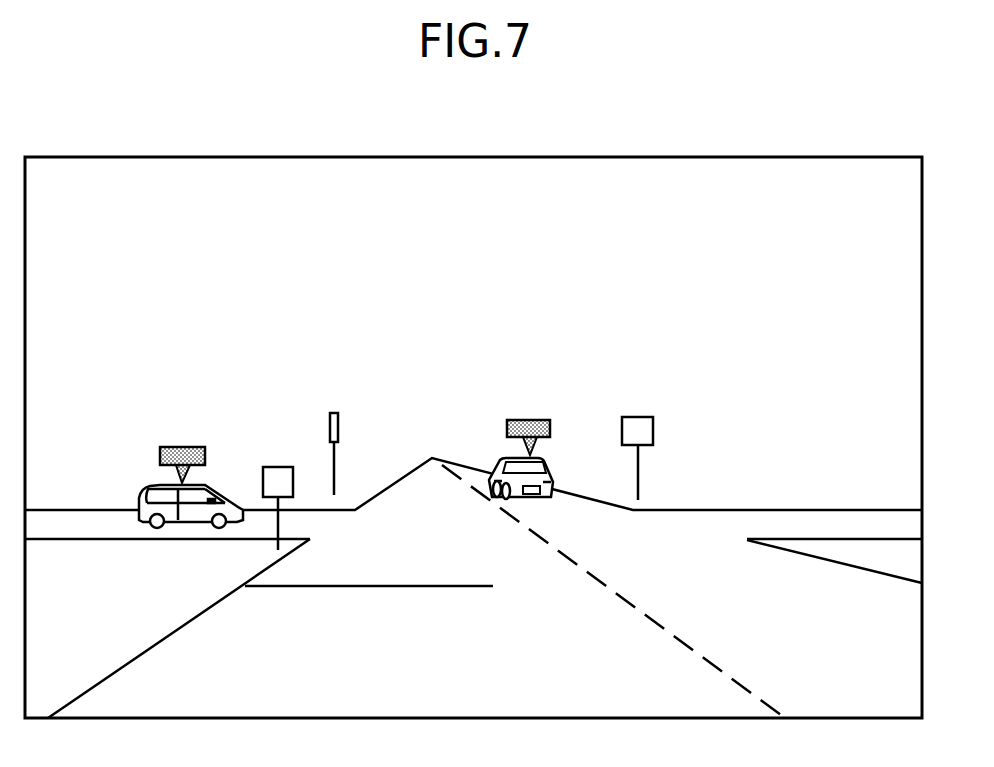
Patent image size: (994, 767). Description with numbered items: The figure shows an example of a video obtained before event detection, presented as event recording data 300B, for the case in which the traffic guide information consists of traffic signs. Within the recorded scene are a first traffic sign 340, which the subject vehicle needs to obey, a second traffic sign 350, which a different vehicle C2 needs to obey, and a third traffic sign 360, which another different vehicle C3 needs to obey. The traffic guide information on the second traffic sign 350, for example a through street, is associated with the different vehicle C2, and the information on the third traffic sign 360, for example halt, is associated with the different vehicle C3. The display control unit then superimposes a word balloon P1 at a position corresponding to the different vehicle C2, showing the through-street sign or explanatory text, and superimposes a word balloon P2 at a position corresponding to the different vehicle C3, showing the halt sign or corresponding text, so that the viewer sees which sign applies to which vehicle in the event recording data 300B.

The event recording data 300B is at (781, 156).
The first traffic sign 340 is at (276, 467).
The second traffic sign 350 is at (637, 416).
The third traffic sign 360 is at (334, 412).
The word balloon P2 is at (179, 446).
The word balloon P1 is at (524, 419).
The different vehicle C3 is at (150, 485).
The different vehicle C2 is at (546, 497).